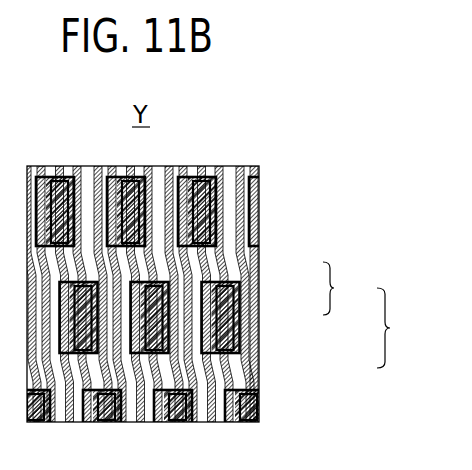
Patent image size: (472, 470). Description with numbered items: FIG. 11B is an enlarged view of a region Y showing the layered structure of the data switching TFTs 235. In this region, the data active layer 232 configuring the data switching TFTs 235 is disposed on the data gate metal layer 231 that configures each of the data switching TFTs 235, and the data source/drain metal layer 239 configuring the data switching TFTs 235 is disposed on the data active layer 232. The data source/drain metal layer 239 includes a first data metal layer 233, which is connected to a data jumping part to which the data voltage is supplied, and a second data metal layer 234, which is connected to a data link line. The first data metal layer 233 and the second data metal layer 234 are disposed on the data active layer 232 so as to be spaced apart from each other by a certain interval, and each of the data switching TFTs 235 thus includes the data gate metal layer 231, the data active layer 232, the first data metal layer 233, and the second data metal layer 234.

The data gate metal layer 231 is at (253, 360).
The data active layer 232 is at (238, 325).
The first data metal layer 233 is at (225, 302).
The second data metal layer 234 is at (218, 268).
The data switching TFTs 235 is at (401, 328).
The data source/drain metal layer 239 is at (347, 288).